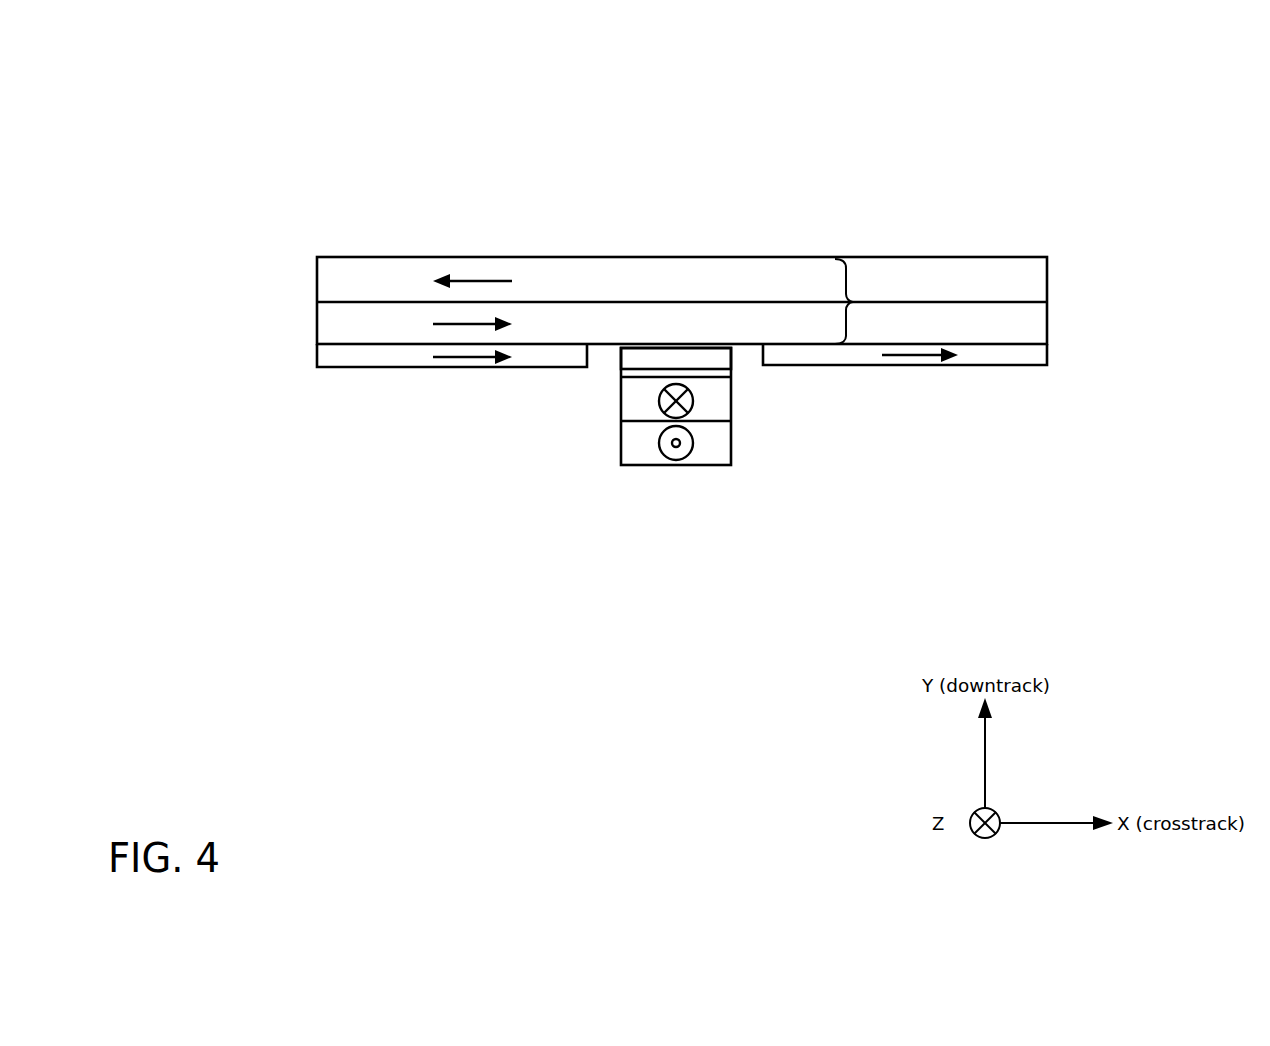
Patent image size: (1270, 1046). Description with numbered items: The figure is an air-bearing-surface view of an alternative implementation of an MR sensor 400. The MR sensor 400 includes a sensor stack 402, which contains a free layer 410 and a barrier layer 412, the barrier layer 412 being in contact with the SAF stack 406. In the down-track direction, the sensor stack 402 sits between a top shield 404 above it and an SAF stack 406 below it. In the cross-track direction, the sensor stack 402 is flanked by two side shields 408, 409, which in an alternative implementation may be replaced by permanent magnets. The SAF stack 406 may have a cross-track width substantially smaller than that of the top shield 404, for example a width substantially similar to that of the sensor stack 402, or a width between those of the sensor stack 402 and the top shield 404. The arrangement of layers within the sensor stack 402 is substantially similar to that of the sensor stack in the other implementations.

The MR sensor 400 is at (205, 86).
The sensor stack 402 is at (618, 358).
The top shield 404 is at (1060, 337).
The SAF stack 406 is at (1060, 373).
The side shield 408 is at (328, 356).
The side shield 409 is at (1052, 355).
The free layer 410 is at (716, 350).
The barrier layer 412 is at (740, 380).